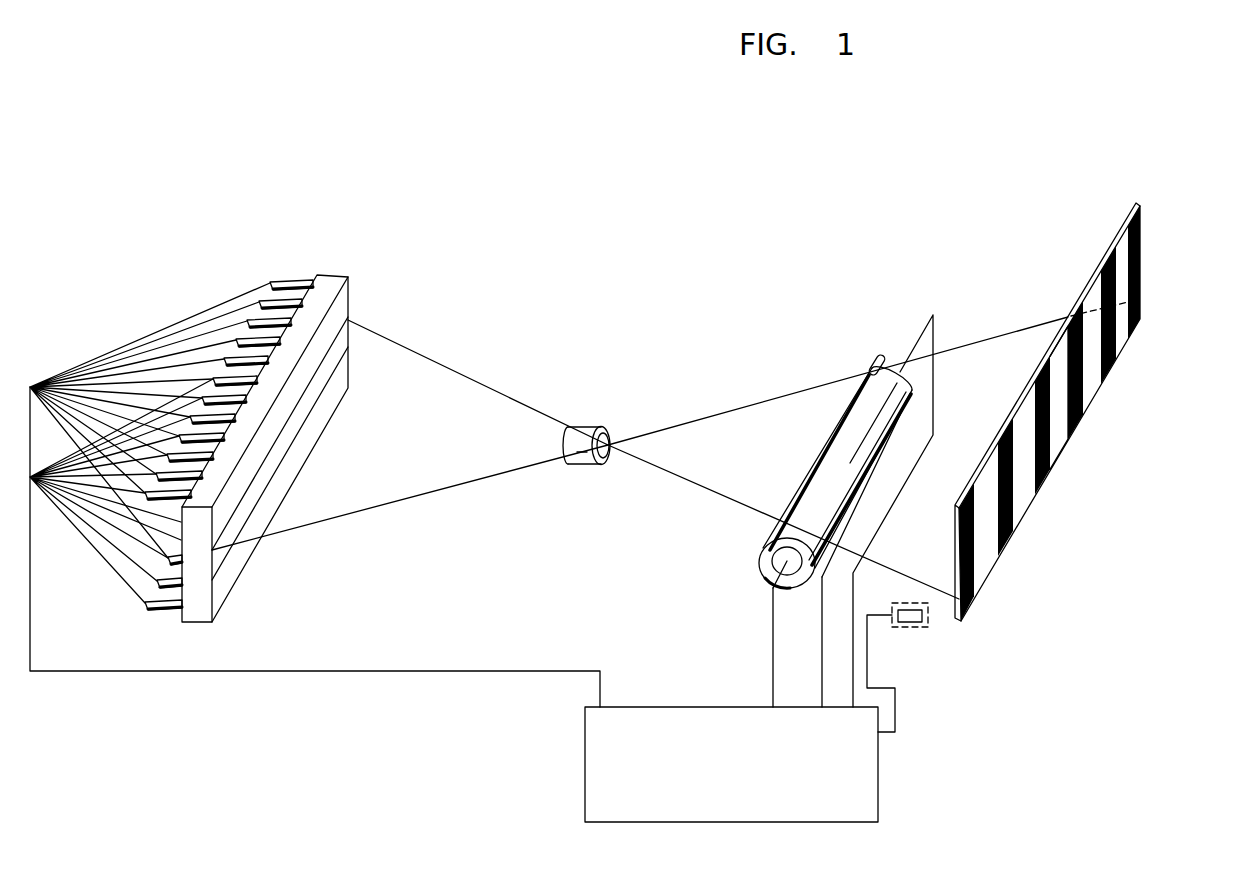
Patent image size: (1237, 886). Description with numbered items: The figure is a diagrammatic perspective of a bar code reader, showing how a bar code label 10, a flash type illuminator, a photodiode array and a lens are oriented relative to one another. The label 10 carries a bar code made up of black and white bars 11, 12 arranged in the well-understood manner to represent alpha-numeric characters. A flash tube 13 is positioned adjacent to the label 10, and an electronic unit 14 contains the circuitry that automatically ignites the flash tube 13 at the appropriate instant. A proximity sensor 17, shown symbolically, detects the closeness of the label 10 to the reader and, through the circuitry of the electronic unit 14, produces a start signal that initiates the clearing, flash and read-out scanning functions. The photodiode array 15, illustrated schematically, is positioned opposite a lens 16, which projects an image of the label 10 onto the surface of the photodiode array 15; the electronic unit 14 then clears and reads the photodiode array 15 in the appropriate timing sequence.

The bar code label 10 is at (1112, 372).
The black bars 11 is at (1050, 478).
The white bars 12 is at (1022, 508).
The flash tube 13 is at (876, 408).
The electronic unit 14 is at (675, 700).
The photodiode array 15 is at (330, 280).
The lens 16 is at (583, 432).
The proximity sensor 17 is at (913, 616).